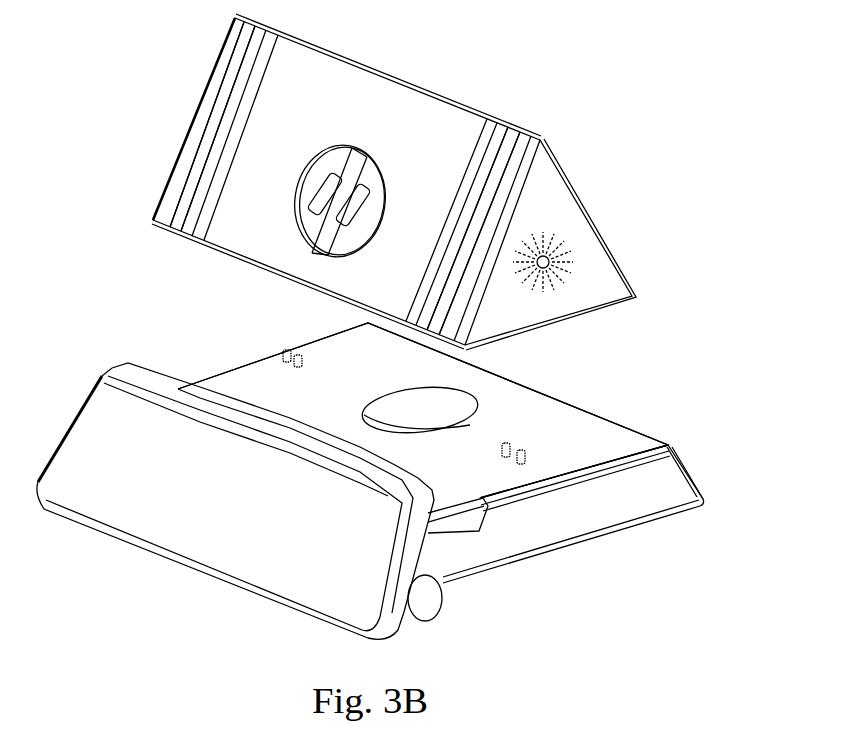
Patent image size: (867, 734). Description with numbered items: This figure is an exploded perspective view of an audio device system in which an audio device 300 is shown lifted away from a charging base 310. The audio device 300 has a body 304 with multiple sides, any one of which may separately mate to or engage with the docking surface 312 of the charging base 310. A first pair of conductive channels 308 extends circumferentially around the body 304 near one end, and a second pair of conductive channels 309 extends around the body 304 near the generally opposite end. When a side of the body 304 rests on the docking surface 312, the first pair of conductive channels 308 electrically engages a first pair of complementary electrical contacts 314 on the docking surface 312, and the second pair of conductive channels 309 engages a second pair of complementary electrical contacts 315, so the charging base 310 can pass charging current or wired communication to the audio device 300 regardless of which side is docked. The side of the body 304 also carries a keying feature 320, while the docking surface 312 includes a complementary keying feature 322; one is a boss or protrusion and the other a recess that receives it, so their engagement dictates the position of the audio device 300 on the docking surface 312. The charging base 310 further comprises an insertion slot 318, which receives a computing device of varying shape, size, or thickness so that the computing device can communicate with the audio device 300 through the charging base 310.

The audio device 300 is at (118, 47).
The body 304 is at (166, 174).
The first pair of conductive channels 308 is at (503, 163).
The second pair of conductive channels 309 is at (270, 71).
The charging base 310 is at (698, 457).
The docking surface 312 is at (395, 373).
The first pair of complementary electrical contacts 314 is at (528, 455).
The second pair of complementary electrical contacts 315 is at (281, 363).
The insertion slot 318 is at (448, 512).
The keying feature 320 is at (380, 158).
The complementary keying feature 322 is at (478, 413).